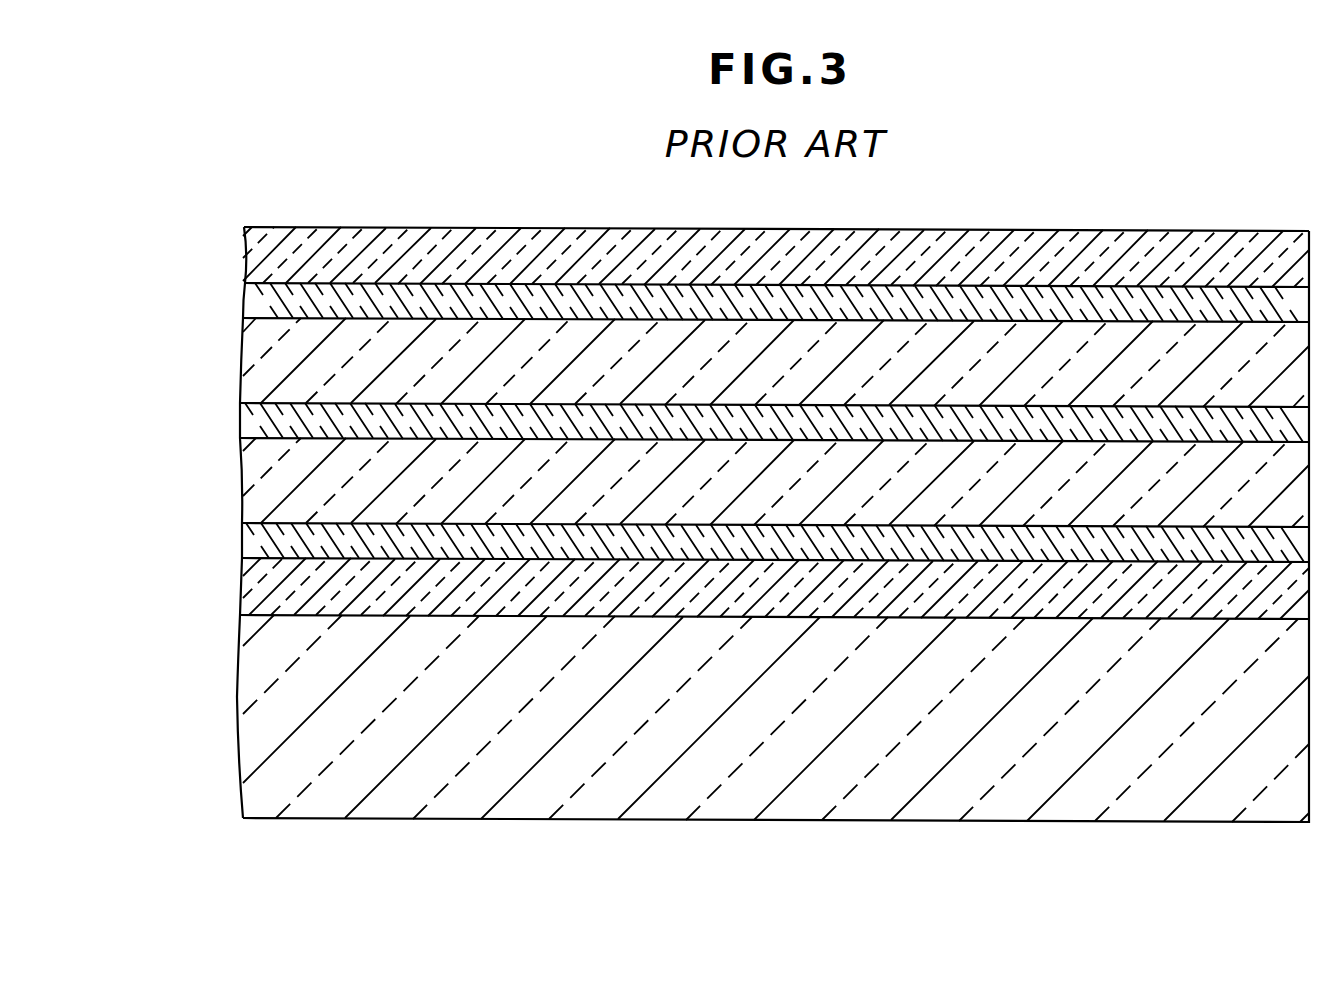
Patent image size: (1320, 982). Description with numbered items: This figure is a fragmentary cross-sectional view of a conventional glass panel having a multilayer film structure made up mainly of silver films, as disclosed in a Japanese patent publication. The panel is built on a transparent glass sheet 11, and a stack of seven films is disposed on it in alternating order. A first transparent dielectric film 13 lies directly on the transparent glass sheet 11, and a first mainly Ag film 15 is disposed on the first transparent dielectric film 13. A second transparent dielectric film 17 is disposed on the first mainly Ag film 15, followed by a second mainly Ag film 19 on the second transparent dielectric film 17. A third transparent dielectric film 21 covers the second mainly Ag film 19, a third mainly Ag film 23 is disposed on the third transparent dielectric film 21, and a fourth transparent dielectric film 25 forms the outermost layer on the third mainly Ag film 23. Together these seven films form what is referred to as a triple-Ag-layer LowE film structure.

The transparent glass sheet 11 is at (908, 770).
The first transparent dielectric film 13 is at (243, 597).
The first mainly Ag film 15 is at (265, 542).
The second transparent dielectric film 17 is at (268, 482).
The second mainly Ag film 19 is at (282, 421).
The third transparent dielectric film 21 is at (268, 370).
The third mainly Ag film 23 is at (283, 302).
The fourth transparent dielectric film 25 is at (285, 260).